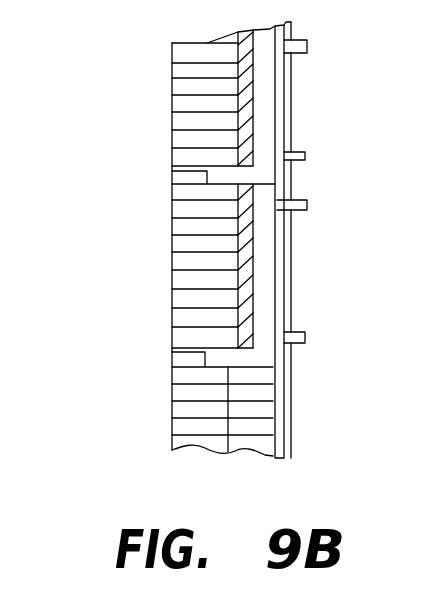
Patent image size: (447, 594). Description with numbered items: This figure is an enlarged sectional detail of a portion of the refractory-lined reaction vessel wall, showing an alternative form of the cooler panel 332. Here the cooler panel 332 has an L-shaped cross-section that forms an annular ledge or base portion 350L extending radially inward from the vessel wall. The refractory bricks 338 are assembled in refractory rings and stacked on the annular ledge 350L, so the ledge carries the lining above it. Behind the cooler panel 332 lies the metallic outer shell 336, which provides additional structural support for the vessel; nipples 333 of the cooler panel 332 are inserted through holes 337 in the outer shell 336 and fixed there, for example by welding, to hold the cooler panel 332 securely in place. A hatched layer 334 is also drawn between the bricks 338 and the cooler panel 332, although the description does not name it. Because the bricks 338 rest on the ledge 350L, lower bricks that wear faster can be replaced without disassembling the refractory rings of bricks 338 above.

The refractory bricks 338 is at (173, 170).
The annular ledge or base portion 350L is at (225, 172).
The hatched layer with tab 334 is at (250, 72).
The cooler panel 332 is at (280, 108).
The outer shell 336 is at (292, 242).
The hole 337 is at (294, 168).
The nipple 333 is at (300, 200).